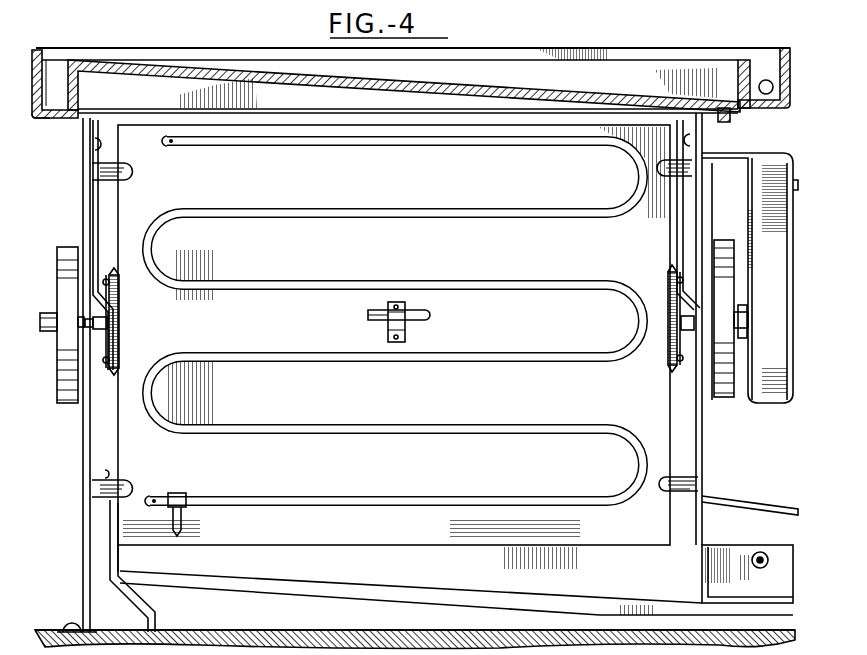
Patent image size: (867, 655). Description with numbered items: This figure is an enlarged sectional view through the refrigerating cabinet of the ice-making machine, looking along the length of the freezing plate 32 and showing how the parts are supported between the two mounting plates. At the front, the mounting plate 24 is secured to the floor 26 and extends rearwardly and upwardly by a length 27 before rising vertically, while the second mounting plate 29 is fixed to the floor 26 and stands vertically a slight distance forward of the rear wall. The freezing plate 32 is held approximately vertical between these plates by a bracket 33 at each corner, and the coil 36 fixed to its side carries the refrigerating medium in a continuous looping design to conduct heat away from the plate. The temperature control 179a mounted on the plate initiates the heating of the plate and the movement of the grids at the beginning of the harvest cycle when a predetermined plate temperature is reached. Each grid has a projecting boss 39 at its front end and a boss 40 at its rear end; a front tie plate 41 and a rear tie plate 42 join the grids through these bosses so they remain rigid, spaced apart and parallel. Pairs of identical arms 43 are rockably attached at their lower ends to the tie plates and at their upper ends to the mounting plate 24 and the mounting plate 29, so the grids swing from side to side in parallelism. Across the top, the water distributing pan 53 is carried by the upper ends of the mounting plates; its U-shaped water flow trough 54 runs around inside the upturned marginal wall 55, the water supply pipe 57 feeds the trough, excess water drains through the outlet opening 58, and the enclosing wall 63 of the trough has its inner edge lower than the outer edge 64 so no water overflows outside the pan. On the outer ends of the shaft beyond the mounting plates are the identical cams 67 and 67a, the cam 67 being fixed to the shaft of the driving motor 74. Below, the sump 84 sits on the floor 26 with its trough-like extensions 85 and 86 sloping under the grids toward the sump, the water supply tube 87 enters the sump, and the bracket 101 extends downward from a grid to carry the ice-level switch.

The mounting plate 24 is at (708, 423).
The floor 26 is at (211, 631).
The rearwardly and upwardly extending length of mounting plate 27 is at (770, 507).
The second mounting plate 29 is at (88, 449).
The freezing plate 32 is at (394, 336).
The bracket 33 is at (121, 171).
The coil 36 is at (341, 212).
The projecting boss 39 is at (670, 347).
The projecting boss 40 is at (115, 336).
The tie plate 41 is at (676, 271).
The tie plate 42 is at (110, 354).
The arm 43 is at (98, 218).
The water distributing pan 53 is at (522, 44).
The water flow trough 54 is at (55, 104).
The upturned marginal wall 55 is at (33, 84).
The water supply pipe 57 is at (764, 95).
The outlet opening 58 is at (723, 119).
The enclosing wall of trough 63 is at (234, 64).
The outer edge 64 is at (38, 46).
The cam 67 is at (720, 257).
The cam 67a is at (62, 256).
The driving motor 74 is at (772, 204).
The sump 84 is at (731, 557).
The trough-like extension 85 is at (333, 567).
The trough-like extension 86 is at (420, 595).
The water supply tube 87 is at (763, 551).
The bracket 101 is at (142, 614).
The temperature control 179a is at (430, 322).